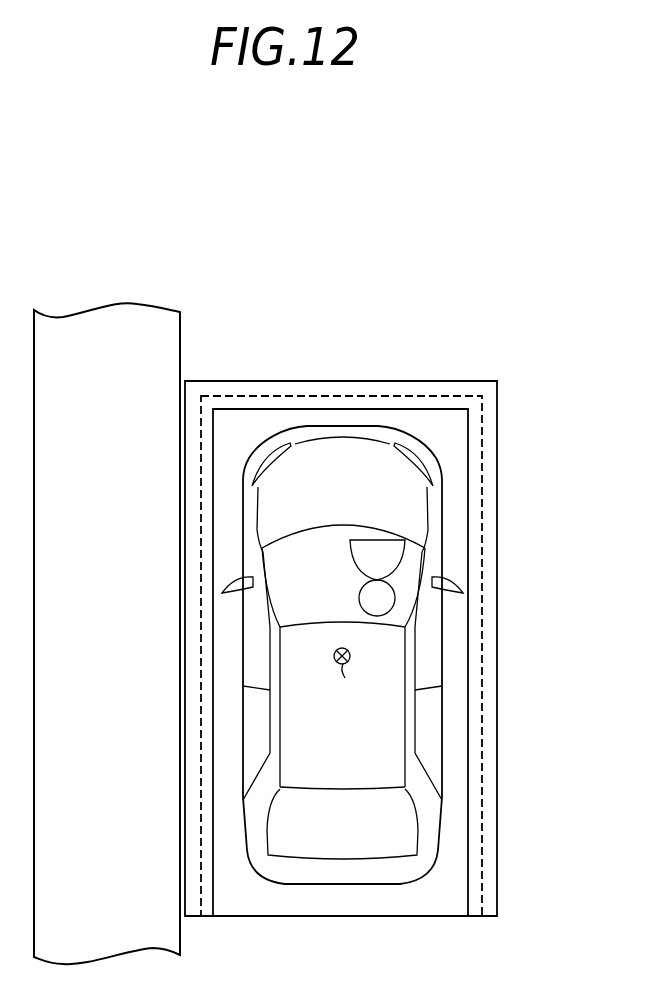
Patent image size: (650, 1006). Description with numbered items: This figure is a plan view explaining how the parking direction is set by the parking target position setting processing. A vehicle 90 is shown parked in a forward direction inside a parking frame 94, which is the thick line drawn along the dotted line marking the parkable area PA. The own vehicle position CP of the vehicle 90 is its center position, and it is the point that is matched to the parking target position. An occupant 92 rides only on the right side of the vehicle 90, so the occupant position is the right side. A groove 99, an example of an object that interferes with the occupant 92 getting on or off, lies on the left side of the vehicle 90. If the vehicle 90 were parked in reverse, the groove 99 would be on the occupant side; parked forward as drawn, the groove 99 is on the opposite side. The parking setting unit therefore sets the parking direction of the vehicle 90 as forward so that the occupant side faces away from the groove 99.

The groove 99 is at (182, 338).
The parking frame 94 is at (497, 382).
The parkable area PA is at (483, 744).
The vehicle 90 is at (440, 468).
The occupant 92 is at (405, 542).
The own vehicle position CP is at (345, 682).